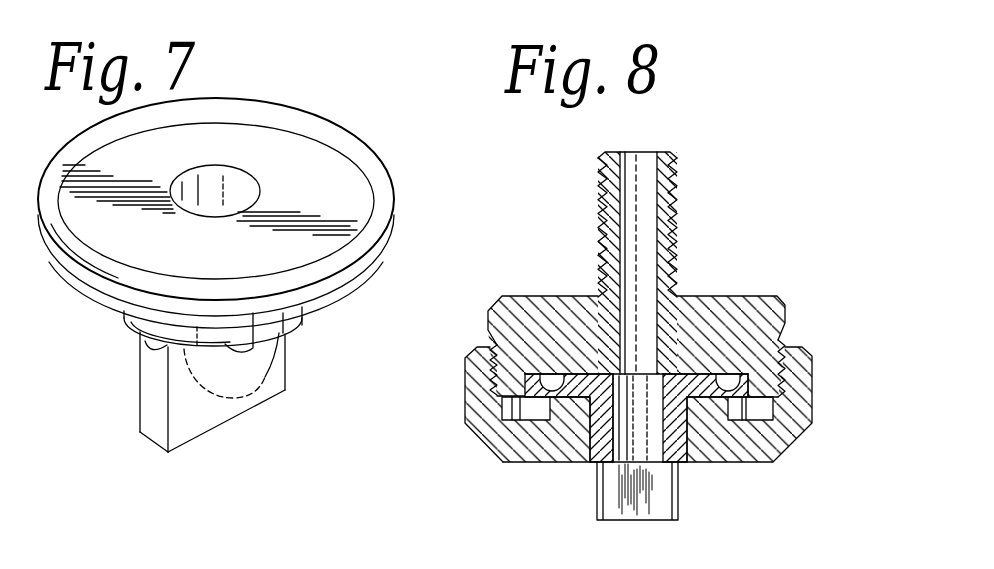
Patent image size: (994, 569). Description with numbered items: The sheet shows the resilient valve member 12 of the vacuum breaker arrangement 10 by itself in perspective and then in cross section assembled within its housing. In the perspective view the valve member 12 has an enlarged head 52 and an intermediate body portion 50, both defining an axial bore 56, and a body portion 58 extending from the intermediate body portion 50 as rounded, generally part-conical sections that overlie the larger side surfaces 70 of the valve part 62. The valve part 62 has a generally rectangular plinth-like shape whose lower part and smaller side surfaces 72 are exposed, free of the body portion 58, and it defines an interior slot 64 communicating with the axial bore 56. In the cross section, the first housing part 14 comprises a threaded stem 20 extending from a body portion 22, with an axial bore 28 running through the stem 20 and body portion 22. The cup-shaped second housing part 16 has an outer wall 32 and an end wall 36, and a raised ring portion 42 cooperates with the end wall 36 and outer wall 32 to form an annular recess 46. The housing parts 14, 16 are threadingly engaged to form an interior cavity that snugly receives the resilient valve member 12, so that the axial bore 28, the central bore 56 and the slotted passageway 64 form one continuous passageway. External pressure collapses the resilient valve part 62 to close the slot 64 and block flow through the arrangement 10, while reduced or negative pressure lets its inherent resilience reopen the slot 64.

In FIG. 8, the vacuum breaker arrangement 10 is at (584, 206).
In FIG. 7, the resilient valve member 12 is at (277, 99).
In FIG. 8, the resilient valve member 12 is at (673, 437).
In FIG. 8, the first housing part 14 is at (703, 297).
In FIG. 8, the second housing part 16 is at (787, 443).
In FIG. 8, the threaded stem 20 is at (675, 202).
In FIG. 8, the body portion 22 is at (783, 297).
In FIG. 8, the axial bore 28 is at (643, 158).
In FIG. 8, the outer wall 32 is at (475, 357).
In FIG. 8, the end wall 36 is at (562, 450).
In FIG. 8, the raised ring portion 42 is at (707, 423).
In FIG. 8, the annular recess 46 is at (513, 408).
In FIG. 7, the intermediate body portion 50 is at (148, 323).
In FIG. 7, the enlarged head 52 is at (83, 268).
In FIG. 7, the axial bore 56 is at (233, 176).
In FIG. 8, the axial bore 56 is at (623, 405).
In FIG. 7, the body portion 58 is at (258, 365).
In FIG. 7, the valve part 62 is at (167, 457).
In FIG. 8, the slot 64 is at (623, 505).
In FIG. 7, the larger side surfaces 70 is at (208, 418).
In FIG. 7, the smaller side surfaces 72 is at (155, 394).